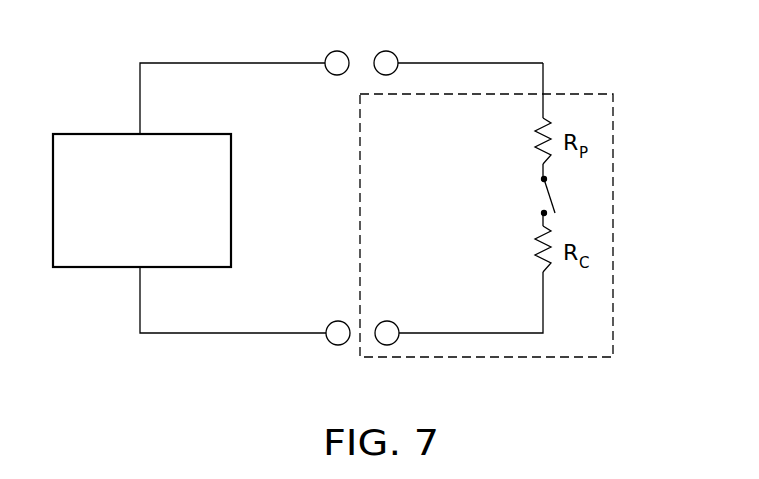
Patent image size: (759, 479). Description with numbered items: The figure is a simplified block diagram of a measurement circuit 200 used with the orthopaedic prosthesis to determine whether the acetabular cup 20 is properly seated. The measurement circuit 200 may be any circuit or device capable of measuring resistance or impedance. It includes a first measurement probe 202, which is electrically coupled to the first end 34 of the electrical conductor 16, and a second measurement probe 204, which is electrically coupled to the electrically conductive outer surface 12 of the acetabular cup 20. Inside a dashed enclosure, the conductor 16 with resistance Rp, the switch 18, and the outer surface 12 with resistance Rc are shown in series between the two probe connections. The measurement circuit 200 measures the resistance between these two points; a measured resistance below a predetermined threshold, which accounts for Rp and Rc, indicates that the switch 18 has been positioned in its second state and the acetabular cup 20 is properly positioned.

The measurement circuit 200 is at (88, 133).
The first measurement probe 202 is at (331, 52).
The second measurement probe 204 is at (332, 322).
The first end of the electrical conductor 34 is at (391, 52).
The electrically conductive outer surface 12 is at (392, 322).
The electrical conductor 16 is at (471, 63).
The switch 18 is at (572, 190).
The acetabular cup 20 is at (613, 250).